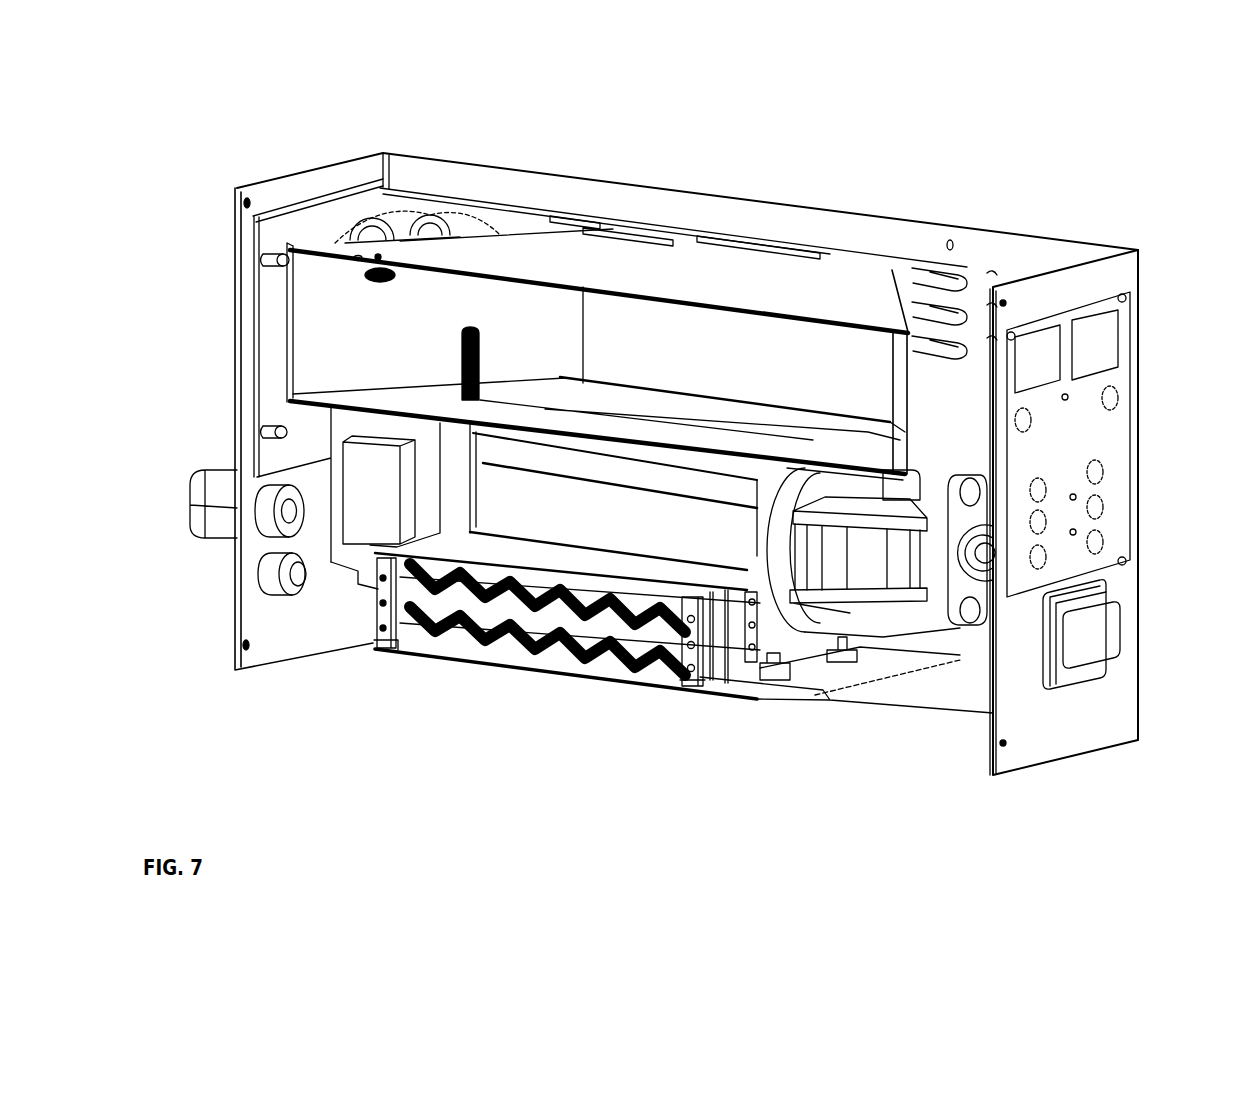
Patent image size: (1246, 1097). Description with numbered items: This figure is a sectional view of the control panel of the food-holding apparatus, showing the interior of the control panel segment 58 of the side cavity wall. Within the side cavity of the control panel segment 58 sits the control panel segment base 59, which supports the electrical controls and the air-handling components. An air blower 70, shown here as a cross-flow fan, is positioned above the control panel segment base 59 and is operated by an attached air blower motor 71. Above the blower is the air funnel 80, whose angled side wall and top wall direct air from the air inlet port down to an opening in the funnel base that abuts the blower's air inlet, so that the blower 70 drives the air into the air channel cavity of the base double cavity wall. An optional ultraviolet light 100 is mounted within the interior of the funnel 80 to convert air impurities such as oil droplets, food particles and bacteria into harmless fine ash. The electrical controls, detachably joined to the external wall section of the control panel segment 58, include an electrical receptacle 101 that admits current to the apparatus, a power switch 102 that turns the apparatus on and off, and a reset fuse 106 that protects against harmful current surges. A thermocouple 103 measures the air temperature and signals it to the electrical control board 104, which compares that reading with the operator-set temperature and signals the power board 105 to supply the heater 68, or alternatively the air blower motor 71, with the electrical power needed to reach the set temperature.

The control panel segment 58 is at (1060, 263).
The control panel segment base 59 is at (893, 663).
The heater 68 is at (655, 673).
The air blower 70 is at (741, 537).
The air blower motor 71 is at (885, 575).
The air funnel 80 is at (815, 283).
The ultraviolet light 100 is at (377, 252).
The electrical receptacle 101 is at (230, 488).
The power switch 102 is at (1113, 650).
The thermocouple 103 is at (449, 376).
The electrical control board 104 is at (1107, 433).
The power board 105 is at (428, 216).
The reset fuse 106 is at (271, 575).